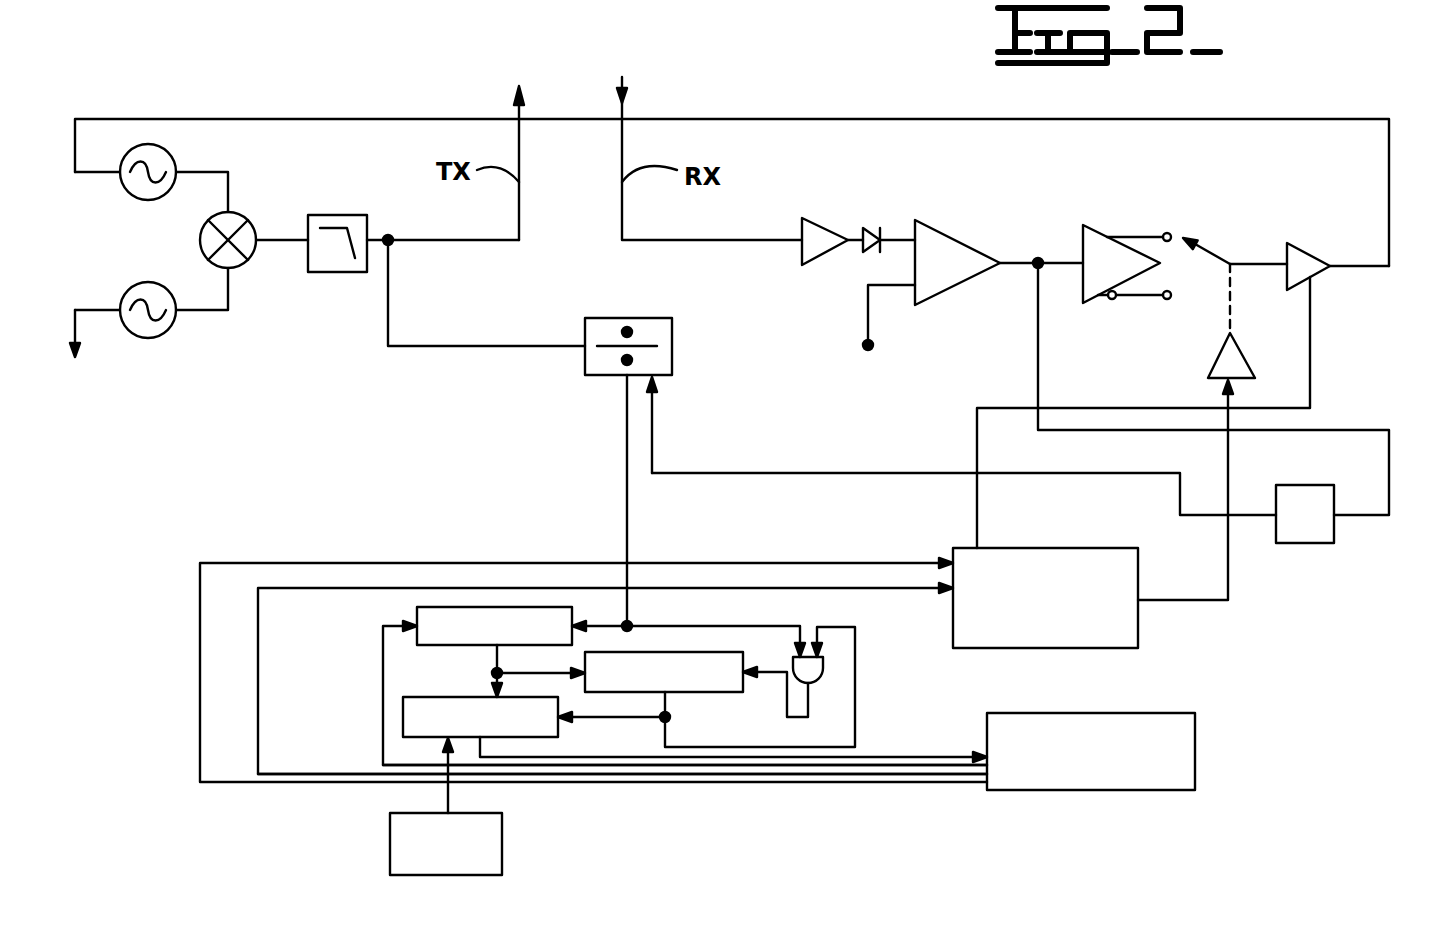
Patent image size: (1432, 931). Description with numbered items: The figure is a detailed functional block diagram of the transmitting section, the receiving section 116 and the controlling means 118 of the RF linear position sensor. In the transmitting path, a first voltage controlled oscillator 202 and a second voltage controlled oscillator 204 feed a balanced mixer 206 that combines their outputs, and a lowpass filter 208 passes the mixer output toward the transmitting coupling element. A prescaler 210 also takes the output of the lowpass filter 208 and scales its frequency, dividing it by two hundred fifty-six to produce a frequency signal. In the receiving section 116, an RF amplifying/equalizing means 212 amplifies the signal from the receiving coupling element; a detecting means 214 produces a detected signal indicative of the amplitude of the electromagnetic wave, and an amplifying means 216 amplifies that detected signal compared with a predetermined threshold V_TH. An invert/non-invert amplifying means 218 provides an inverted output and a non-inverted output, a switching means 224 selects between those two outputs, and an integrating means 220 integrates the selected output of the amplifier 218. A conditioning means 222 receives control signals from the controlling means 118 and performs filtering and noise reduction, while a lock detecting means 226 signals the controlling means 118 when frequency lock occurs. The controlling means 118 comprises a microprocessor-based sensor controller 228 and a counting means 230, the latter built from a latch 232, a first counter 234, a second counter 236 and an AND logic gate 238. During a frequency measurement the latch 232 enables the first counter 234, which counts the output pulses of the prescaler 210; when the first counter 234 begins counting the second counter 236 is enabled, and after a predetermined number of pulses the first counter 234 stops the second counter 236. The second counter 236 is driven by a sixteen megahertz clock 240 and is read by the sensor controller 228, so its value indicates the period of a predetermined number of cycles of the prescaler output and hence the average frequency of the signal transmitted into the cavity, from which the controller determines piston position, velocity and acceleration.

The first voltage controlled oscillator 202 is at (170, 152).
The second voltage controlled oscillator 204 is at (148, 338).
The balanced mixer 206 is at (242, 264).
The lowpass filter 208 is at (330, 215).
The prescaler 210 is at (624, 318).
The RF amplifying/equalizing means 212 is at (802, 226).
The detecting means 214 is at (880, 200).
The amplifying means 216 is at (945, 294).
The invert/non-invert amplifying means 218 is at (1095, 225).
The integrating means 220 is at (1290, 244).
The signal conditioning means 222 is at (1000, 548).
The switching means 224 is at (1192, 300).
The lock detecting means 226 is at (1290, 485).
The sensor controller 228 is at (1118, 713).
The counting means 230 is at (334, 692).
The latch 232 is at (417, 632).
The first counter 234 is at (700, 692).
The second counter 236 is at (478, 697).
The AND logic gate 238 is at (822, 675).
The 16 MHz clock 240 is at (502, 848).
The receiving section 116 is at (1278, 675).
The controlling means 118 is at (770, 810).